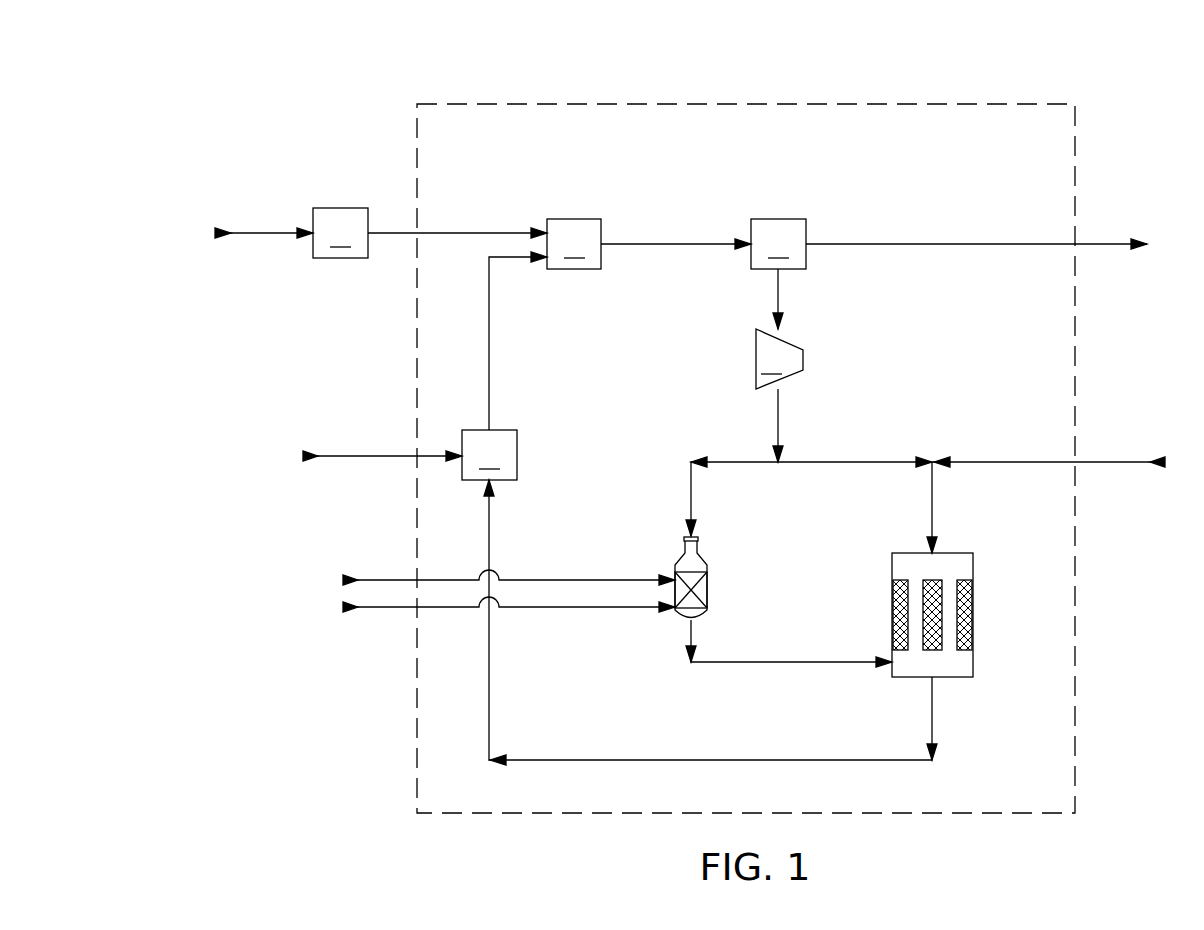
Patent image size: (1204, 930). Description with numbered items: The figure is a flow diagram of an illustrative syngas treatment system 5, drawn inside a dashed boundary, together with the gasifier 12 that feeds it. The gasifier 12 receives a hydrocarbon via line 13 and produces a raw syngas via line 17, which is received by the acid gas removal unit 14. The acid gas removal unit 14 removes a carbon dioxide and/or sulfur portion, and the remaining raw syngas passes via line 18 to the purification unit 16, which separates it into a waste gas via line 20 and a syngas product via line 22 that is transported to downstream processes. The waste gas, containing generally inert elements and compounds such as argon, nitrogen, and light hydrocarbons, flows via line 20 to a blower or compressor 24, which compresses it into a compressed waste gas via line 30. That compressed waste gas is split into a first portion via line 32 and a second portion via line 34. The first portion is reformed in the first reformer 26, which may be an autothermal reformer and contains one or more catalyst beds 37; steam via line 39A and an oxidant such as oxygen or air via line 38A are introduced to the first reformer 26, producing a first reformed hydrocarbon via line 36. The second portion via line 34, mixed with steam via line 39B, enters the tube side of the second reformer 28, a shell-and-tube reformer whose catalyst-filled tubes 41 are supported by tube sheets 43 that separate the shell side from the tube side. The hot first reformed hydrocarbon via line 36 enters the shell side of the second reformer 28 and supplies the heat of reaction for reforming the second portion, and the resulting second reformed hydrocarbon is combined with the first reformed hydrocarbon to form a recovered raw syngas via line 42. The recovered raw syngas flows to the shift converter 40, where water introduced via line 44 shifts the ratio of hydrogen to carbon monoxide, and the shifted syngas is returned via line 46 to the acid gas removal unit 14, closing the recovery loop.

The syngas treatment system 5 is at (1076, 151).
The gasifier 12 is at (340, 233).
The line 13 is at (256, 232).
The acid gas removal unit 14 is at (574, 244).
The purification unit 16 is at (778, 244).
The line 17 is at (496, 232).
The line 18 is at (675, 243).
The line 20 is at (780, 291).
The line 22 is at (915, 243).
The compressor 24 is at (779, 359).
The first reformer 26 is at (699, 541).
The second reformer 28 is at (902, 552).
The line 30 is at (780, 399).
The line 32 is at (729, 461).
The line 34 is at (880, 461).
The line 36 is at (766, 661).
The catalyst bed 37 is at (696, 578).
The line 38A is at (561, 608).
The line 39A is at (563, 579).
The line 39B is at (999, 461).
The shift converter 40 is at (489, 455).
The catalyst-filled tube 41 is at (965, 612).
The line 42 is at (564, 759).
The tube sheet 43 is at (964, 580).
The line 44 is at (371, 455).
The line 46 is at (490, 343).